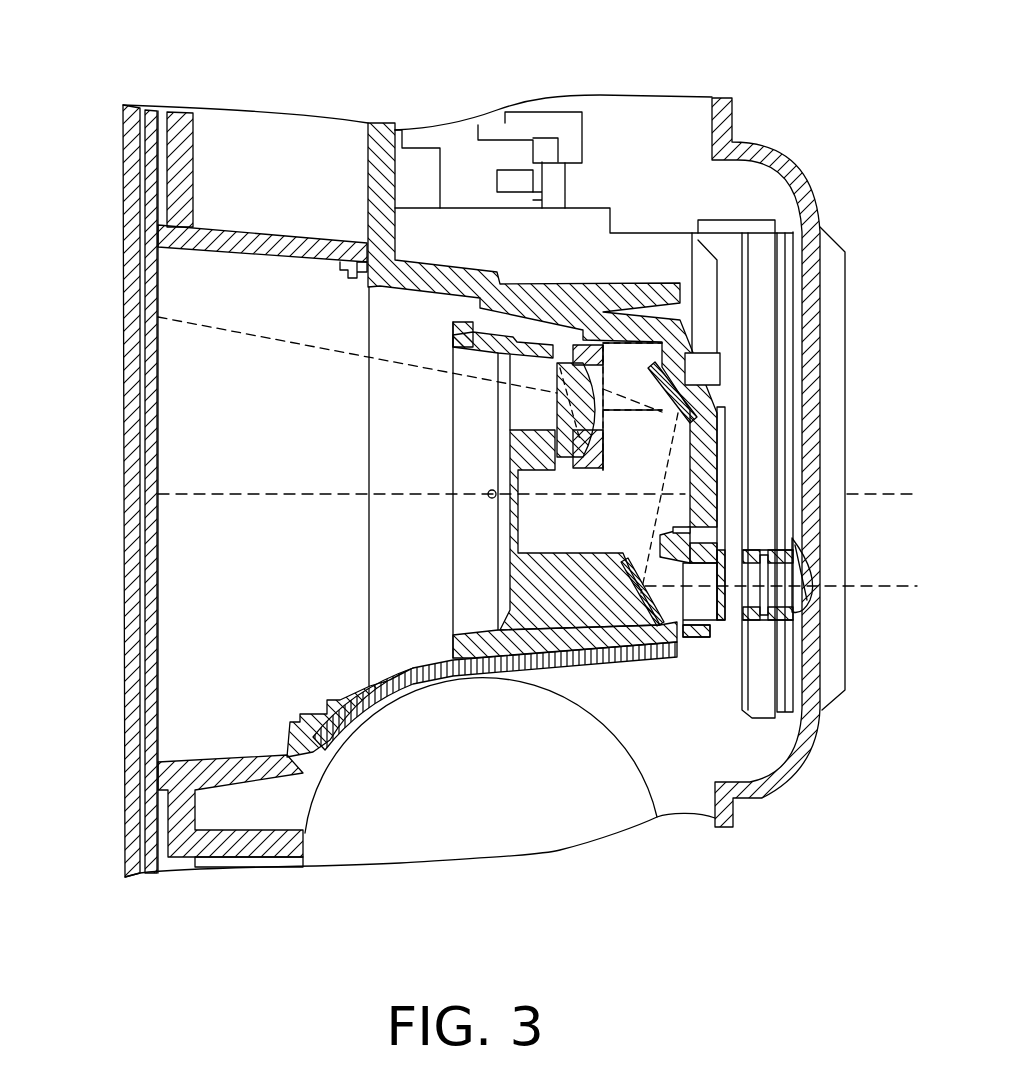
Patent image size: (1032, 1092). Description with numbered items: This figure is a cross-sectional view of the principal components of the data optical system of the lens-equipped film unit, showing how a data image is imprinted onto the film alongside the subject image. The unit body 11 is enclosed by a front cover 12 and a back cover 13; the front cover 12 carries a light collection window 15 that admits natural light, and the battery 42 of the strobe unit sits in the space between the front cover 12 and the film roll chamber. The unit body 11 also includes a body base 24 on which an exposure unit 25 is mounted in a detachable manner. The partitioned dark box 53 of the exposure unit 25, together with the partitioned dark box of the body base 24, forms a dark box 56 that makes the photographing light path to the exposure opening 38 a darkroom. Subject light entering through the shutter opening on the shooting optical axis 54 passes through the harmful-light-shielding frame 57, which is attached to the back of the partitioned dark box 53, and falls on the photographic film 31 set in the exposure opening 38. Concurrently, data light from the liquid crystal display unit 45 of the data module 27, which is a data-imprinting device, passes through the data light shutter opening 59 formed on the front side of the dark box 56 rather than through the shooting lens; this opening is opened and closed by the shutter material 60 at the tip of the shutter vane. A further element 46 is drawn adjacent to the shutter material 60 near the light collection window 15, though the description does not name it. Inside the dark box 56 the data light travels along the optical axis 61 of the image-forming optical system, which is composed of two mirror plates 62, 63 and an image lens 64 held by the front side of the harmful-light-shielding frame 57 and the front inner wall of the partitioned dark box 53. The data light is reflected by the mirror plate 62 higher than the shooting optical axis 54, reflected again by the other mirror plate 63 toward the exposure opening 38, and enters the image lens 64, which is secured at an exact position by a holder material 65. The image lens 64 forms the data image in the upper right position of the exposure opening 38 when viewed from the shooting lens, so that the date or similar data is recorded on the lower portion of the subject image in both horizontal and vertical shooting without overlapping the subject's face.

The unit body 11 is at (615, 92).
The front cover 12 is at (790, 150).
The back cover 13 is at (122, 395).
The photographic film 31 is at (158, 417).
The exposure opening 38 is at (278, 240).
The dark box 56 is at (338, 268).
The partitioned dark box 53 is at (553, 283).
The data module 27 is at (745, 716).
The image lens 64 is at (562, 410).
The holder material 65 is at (593, 433).
The mirror plate 62 is at (633, 560).
The mirror plate 63 is at (678, 412).
The optical axis of the image-forming optical system 61 is at (313, 368).
The shooting optical axis 54 is at (268, 497).
The harmful-light-shielding frame 57 is at (462, 572).
The liquid crystal display unit 45 is at (737, 607).
The data light shutter opening 59 is at (692, 633).
The shutter material 60 is at (722, 552).
The pinion 46 is at (813, 597).
The light collection window 15 is at (822, 570).
The body base 24 is at (255, 752).
The exposure unit 25 is at (537, 668).
The battery 42 is at (587, 823).